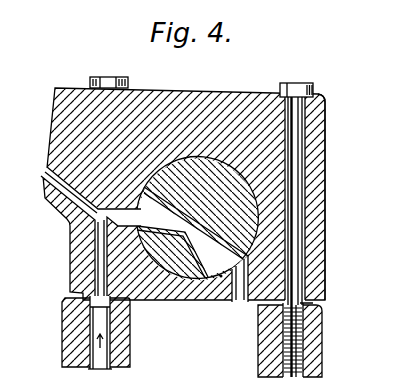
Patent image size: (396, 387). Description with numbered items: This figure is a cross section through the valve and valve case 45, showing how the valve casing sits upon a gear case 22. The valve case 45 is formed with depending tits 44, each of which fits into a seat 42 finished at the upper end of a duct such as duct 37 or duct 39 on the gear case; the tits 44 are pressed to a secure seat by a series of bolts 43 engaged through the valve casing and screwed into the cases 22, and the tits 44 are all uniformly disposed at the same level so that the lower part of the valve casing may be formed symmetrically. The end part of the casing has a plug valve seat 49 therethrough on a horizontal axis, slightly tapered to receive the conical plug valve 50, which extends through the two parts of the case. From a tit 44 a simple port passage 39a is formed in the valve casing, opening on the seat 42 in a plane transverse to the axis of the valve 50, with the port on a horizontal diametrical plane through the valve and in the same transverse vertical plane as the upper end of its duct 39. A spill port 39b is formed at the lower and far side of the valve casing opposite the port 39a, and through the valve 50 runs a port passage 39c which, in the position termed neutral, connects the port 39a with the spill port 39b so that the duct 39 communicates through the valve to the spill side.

The case 22 is at (70, 352).
The duct 37 is at (310, 302).
The duct 39 is at (95, 369).
The port passage 39a is at (94, 256).
The spill port 39b is at (242, 300).
The port passage 39c is at (166, 229).
The seat 42 is at (317, 165).
The bolt 43 is at (130, 67).
The tit 44 is at (88, 302).
The valve case 45 is at (211, 104).
The plug valve seat 49 is at (221, 277).
The conical plug valve 50 is at (250, 212).